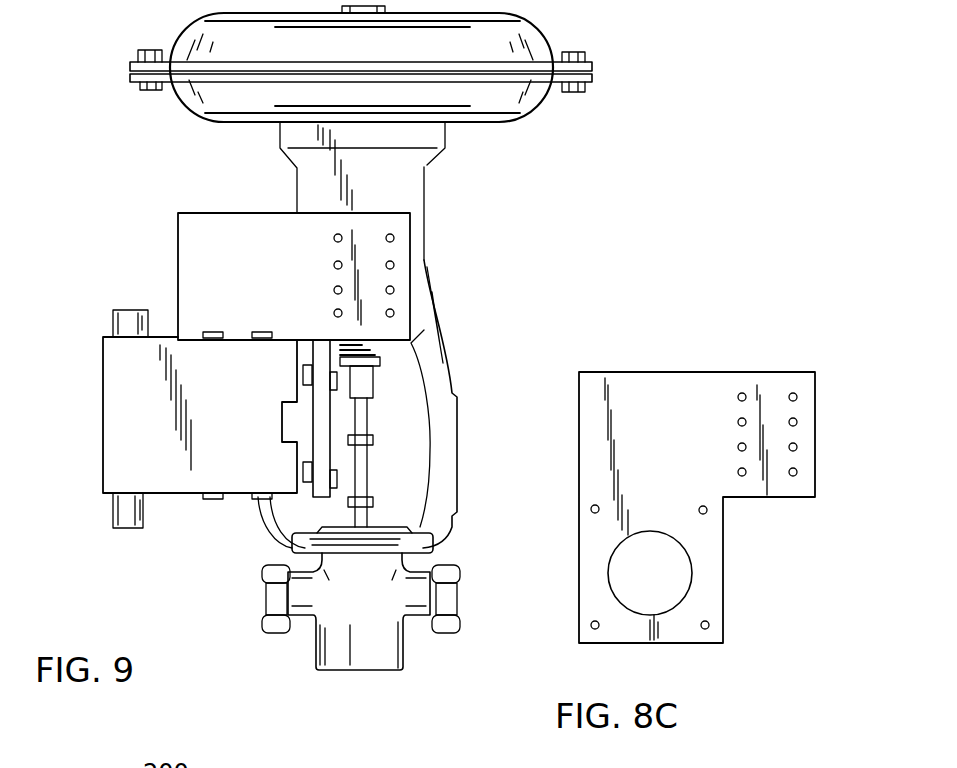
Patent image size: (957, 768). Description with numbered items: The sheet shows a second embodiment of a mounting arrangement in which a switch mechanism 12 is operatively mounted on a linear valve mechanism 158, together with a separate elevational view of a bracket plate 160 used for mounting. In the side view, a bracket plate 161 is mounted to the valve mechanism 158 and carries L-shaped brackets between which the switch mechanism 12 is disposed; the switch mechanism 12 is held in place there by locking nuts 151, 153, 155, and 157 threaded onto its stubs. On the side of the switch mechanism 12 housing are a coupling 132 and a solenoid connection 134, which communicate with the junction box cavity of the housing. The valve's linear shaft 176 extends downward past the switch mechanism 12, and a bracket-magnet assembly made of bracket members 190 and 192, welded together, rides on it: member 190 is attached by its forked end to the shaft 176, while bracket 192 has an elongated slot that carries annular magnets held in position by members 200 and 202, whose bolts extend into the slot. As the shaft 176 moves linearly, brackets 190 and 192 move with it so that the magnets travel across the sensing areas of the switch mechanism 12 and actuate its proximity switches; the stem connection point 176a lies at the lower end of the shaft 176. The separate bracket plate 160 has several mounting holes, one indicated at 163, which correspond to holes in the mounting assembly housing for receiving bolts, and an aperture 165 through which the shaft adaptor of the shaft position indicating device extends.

In FIG. 9, the switch mechanism 12 is at (103, 410).
In FIG. 9, the coupling 132 is at (113, 508).
In FIG. 9, the solenoid connection 134 is at (118, 322).
In FIG. 9, the locking nut 151 is at (258, 500).
In FIG. 9, the locking nut 153 is at (212, 500).
In FIG. 9, the locking nut 155 is at (262, 332).
In FIG. 9, the locking nut 157 is at (214, 332).
In FIG. 9, the linear valve mechanism 158 is at (449, 315).
In FIG. 8C, the bracket plate 160 is at (690, 386).
In FIG. 9, the bracket plate 161 is at (274, 269).
In FIG. 8C, the mounting hole 163 is at (589, 628).
In FIG. 8C, the aperture 165 is at (693, 575).
In FIG. 9, the linear shaft 176 is at (365, 418).
In FIG. 9, the stem connector 176a is at (364, 519).
In FIG. 9, the bracket member 190 is at (303, 472).
In FIG. 9, the bracket member 192 is at (320, 487).
In FIG. 9, the magnet holding member 200 is at (303, 377).
In FIG. 9, the magnet holding member 202 is at (372, 500).